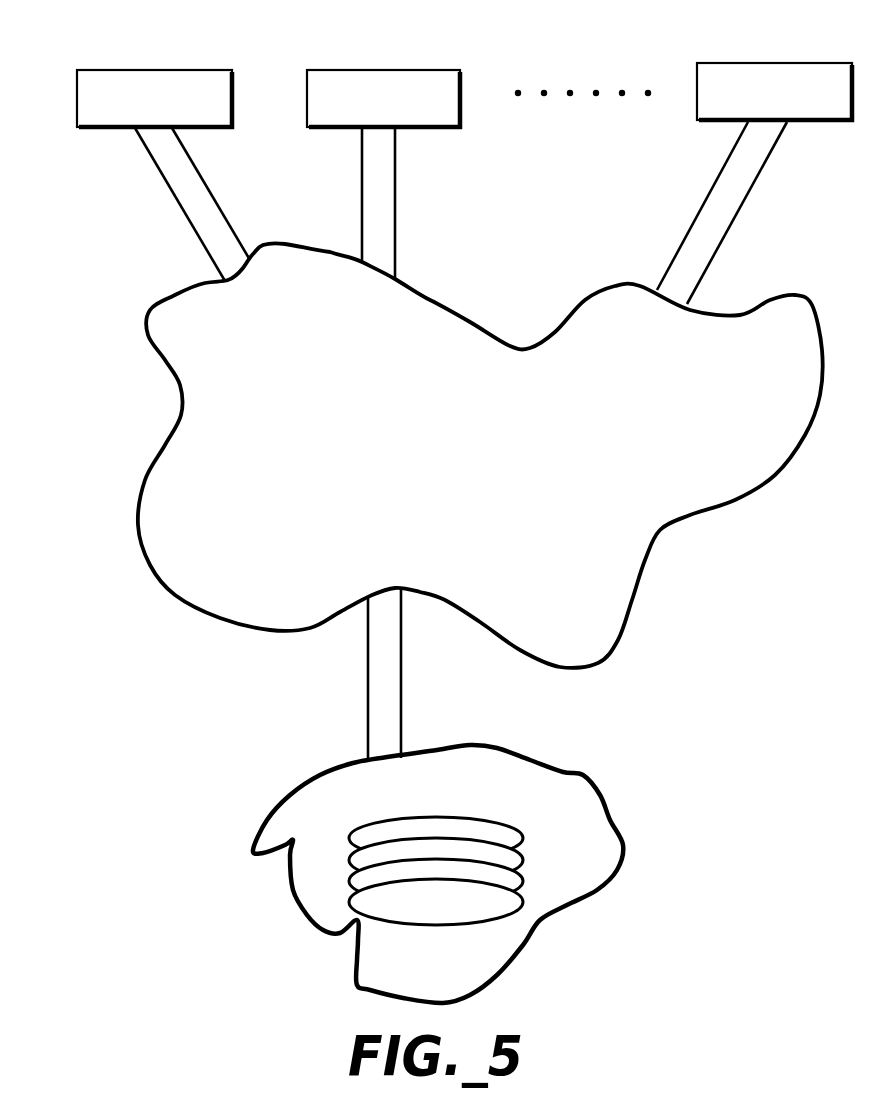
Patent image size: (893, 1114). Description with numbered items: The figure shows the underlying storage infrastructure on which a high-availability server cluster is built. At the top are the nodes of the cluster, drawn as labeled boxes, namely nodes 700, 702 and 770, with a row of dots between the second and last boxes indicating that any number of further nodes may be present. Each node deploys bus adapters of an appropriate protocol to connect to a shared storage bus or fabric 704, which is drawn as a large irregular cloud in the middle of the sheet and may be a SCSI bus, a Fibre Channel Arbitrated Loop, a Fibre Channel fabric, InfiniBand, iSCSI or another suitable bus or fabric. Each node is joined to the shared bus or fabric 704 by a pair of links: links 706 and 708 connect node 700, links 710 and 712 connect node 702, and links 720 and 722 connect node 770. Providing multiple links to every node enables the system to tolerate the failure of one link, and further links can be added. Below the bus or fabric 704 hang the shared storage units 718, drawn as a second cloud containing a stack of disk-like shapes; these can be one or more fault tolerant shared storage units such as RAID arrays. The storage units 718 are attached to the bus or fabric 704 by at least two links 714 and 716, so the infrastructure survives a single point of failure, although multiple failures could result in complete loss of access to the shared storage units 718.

The node 700 is at (125, 70).
The node 702 is at (365, 70).
The node 770 is at (745, 63).
The shared storage bus or fabric 704 is at (487, 468).
The link 706 is at (188, 223).
The link 708 is at (208, 188).
The link 710 is at (361, 228).
The link 712 is at (396, 212).
The link 720 is at (695, 218).
The link 722 is at (738, 210).
The link 714 is at (367, 732).
The link 716 is at (402, 713).
The shared storage units 718 is at (295, 796).